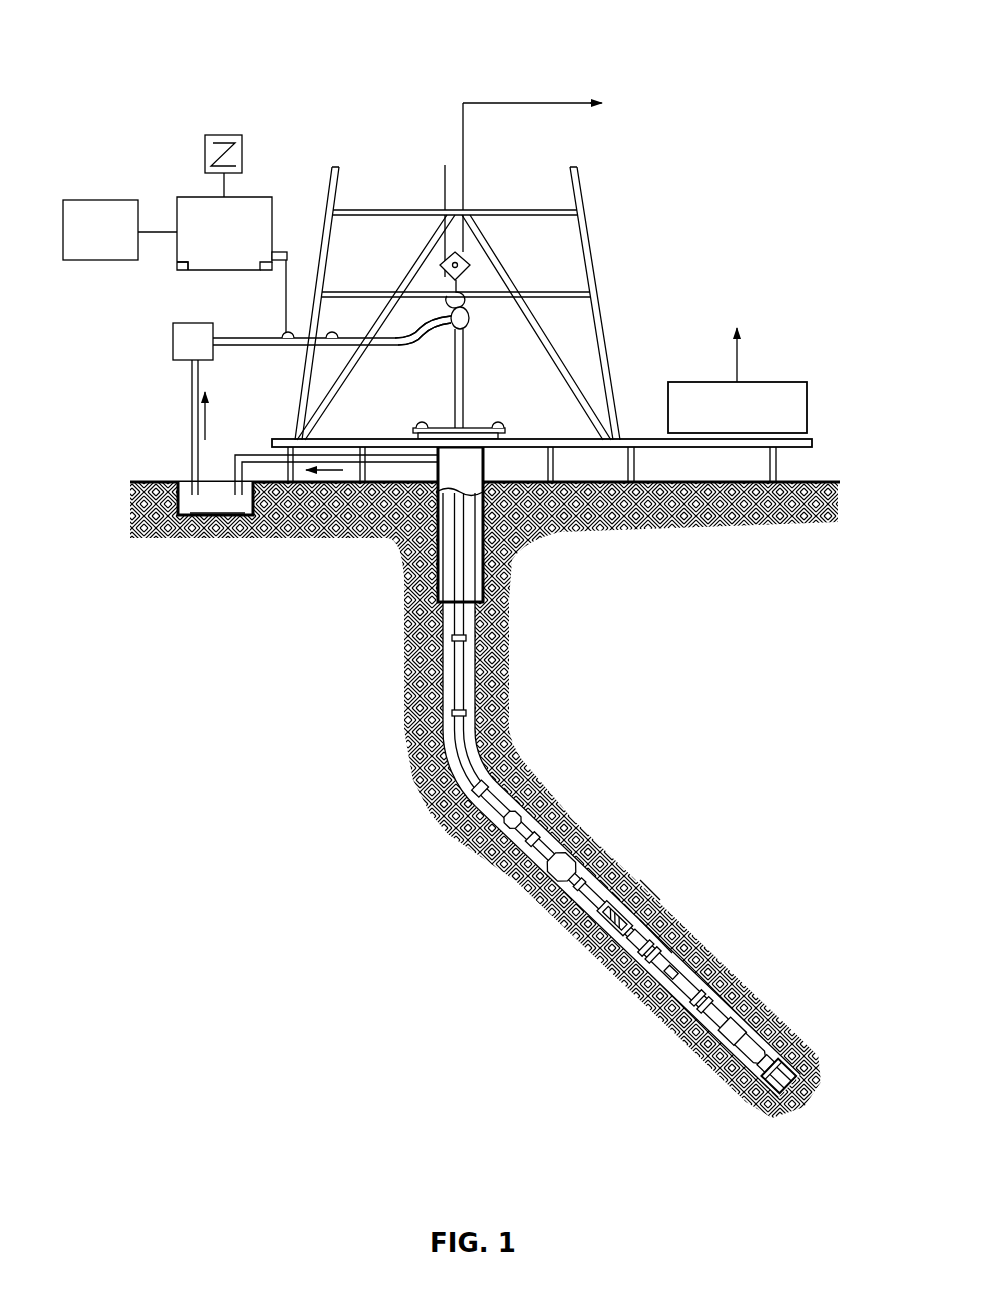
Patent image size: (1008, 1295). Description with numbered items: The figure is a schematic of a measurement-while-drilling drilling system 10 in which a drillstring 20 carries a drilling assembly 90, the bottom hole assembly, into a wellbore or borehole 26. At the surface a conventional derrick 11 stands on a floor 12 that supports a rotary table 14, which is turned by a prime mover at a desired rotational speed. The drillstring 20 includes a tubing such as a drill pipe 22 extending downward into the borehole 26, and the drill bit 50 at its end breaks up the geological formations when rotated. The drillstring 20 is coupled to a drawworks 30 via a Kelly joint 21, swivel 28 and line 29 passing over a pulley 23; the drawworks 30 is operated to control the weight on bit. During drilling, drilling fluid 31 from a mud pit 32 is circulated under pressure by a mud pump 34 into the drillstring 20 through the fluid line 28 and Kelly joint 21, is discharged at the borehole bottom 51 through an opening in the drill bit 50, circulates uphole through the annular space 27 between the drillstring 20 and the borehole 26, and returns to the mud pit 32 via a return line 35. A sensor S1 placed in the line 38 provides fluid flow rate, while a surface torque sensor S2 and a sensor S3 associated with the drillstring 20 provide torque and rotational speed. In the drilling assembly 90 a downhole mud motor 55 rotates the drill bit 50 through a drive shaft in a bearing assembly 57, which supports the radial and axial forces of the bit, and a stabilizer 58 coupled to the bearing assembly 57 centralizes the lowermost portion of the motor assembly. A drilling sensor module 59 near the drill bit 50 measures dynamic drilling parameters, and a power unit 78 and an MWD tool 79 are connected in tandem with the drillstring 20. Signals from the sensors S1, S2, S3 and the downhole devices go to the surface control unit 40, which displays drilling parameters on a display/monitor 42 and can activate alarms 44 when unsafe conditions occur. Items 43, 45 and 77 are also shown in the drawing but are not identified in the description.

The drilling system 10 is at (210, 44).
The derrick 11 is at (601, 305).
The floor 12 is at (629, 436).
The rotary table 14 is at (486, 426).
The drillstring 20 is at (467, 689).
The Kelly joint 21 is at (465, 357).
The drill pipe 22 is at (441, 670).
The pulley 23 is at (471, 270).
The borehole 26 is at (480, 763).
The annular space 27 is at (505, 792).
The swivel 28 is at (440, 330).
The line 29 is at (466, 180).
The drawworks 30 is at (768, 383).
The drilling fluid 31 is at (184, 490).
The mud pit 32 is at (218, 513).
The mud pump 34 is at (173, 339).
The return line 35 is at (404, 463).
The line 38 is at (190, 420).
The surface control unit 40 is at (199, 197).
The display/monitor 42 is at (228, 135).
The sensor 43 is at (286, 333).
The alarms 44 is at (100, 200).
The connection 45 is at (283, 252).
The drill bit 50 is at (796, 1064).
The borehole bottom 51 is at (774, 1107).
The downhole motor 55 is at (655, 935).
The bearing assembly 57 is at (747, 1016).
The stabilizer 58 is at (755, 1040).
The drilling sensor module 59 is at (756, 1068).
The downhole tool 77 is at (551, 881).
The power unit 78 is at (471, 800).
The MWD tool 79 is at (494, 827).
The drilling assembly 90 is at (646, 825).
The sensor S1 is at (335, 331).
The surface torque sensor S2 is at (498, 422).
The sensor S3 is at (422, 422).